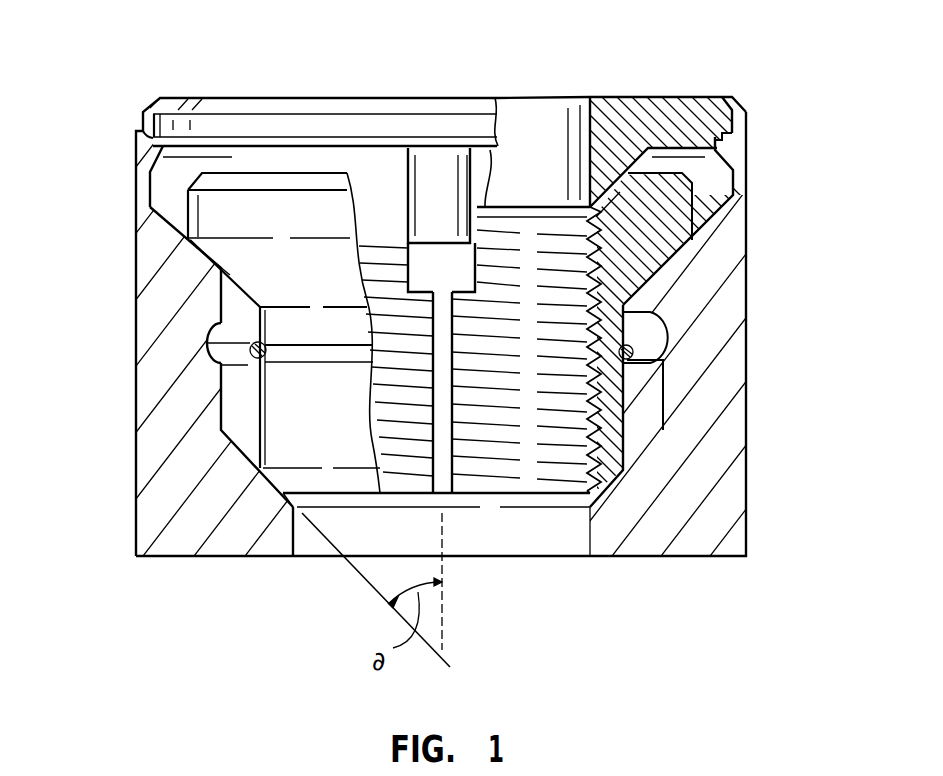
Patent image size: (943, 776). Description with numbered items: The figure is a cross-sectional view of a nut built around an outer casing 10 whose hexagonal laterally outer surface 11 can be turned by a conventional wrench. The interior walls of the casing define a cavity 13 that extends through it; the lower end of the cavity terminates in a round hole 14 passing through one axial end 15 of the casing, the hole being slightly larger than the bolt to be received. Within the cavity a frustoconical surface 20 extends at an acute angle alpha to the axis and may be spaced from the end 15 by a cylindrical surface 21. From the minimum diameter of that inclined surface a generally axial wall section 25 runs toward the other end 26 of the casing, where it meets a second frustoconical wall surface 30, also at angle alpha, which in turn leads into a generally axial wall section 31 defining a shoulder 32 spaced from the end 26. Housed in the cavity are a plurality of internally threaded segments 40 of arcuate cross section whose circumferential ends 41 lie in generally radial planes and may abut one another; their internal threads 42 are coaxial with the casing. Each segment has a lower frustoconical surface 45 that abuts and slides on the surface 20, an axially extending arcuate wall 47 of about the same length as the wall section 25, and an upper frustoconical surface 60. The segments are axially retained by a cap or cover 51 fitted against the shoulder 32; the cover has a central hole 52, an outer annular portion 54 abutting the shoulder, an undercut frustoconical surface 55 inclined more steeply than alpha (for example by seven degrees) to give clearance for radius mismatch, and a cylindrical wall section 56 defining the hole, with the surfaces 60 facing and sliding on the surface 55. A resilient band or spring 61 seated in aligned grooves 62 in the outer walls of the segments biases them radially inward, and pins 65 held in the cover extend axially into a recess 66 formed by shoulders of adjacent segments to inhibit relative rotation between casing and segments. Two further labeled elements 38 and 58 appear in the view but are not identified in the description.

The outer casing 10 is at (727, 514).
The hexagonal laterally outer surface 11 is at (748, 402).
The cavity 13 is at (655, 422).
The hole 14 is at (575, 540).
The axial end 15 is at (208, 557).
The frustoconical surface 20 is at (222, 447).
The cylindrical surface 21 is at (306, 545).
The wall section 25 is at (215, 320).
The other end 26 is at (736, 101).
The second frustoconical wall surface 30 is at (170, 198).
The wall section 31 is at (725, 152).
The shoulder 32 is at (150, 128).
The cap corner 38 is at (162, 105).
The internally threaded segments 40 is at (658, 242).
The circumferential ends 41 is at (470, 480).
The internal threads 42 is at (528, 470).
The frustoconical surface 45 is at (620, 483).
The arcuate wall 47 is at (665, 403).
The cap or cover 51 is at (603, 105).
The central hole 52 is at (513, 110).
The outer annular portion 54 is at (683, 135).
The frustoconical surface 55 is at (627, 157).
The cylindrical wall section 56 is at (570, 105).
The ball detent 58 is at (658, 292).
The frustoconical surfaces 60 is at (700, 198).
The resilient band or spring 61 is at (207, 340).
The grooves 62 is at (320, 352).
The pins 65 is at (445, 157).
The recess 66 is at (422, 262).